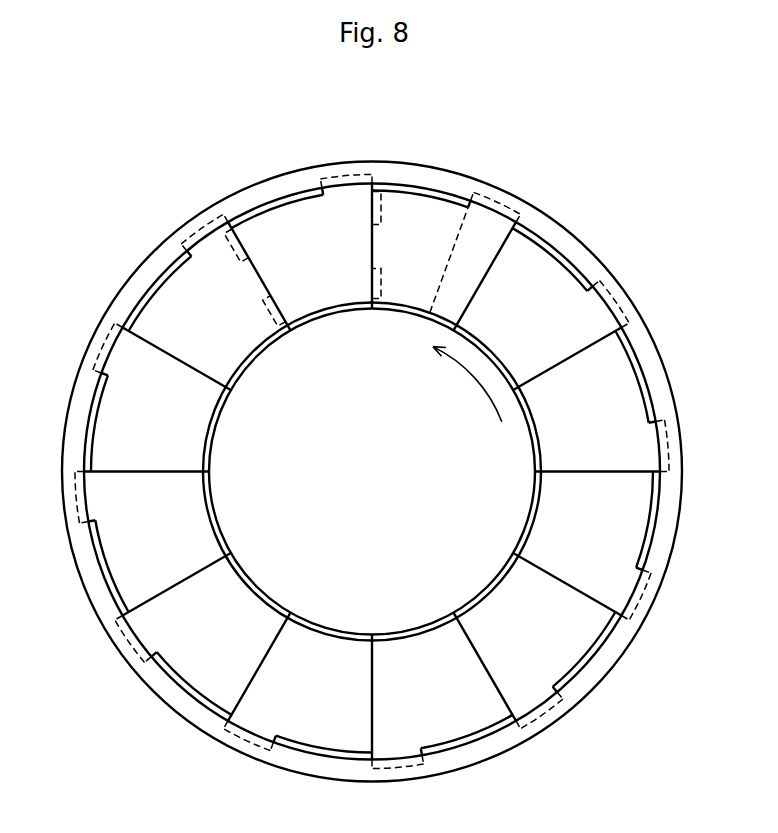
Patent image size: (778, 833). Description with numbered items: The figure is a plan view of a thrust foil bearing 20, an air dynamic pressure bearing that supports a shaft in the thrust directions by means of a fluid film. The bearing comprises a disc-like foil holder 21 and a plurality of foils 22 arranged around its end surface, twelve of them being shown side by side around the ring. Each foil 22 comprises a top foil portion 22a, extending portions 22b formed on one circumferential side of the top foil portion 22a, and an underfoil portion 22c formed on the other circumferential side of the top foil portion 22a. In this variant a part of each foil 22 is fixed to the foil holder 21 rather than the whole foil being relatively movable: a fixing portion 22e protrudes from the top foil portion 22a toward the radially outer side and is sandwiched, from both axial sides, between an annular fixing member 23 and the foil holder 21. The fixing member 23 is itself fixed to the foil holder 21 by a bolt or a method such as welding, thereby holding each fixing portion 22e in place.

The thrust foil bearing 20 is at (394, 446).
The foil holder 21 is at (331, 328).
The foil 22 is at (366, 440).
The top foil portion 22a is at (282, 227).
The extending portions 22b is at (263, 318).
The underfoil portion 22c is at (417, 212).
The fixing portion 22e is at (345, 176).
The fixing member 23 is at (655, 358).